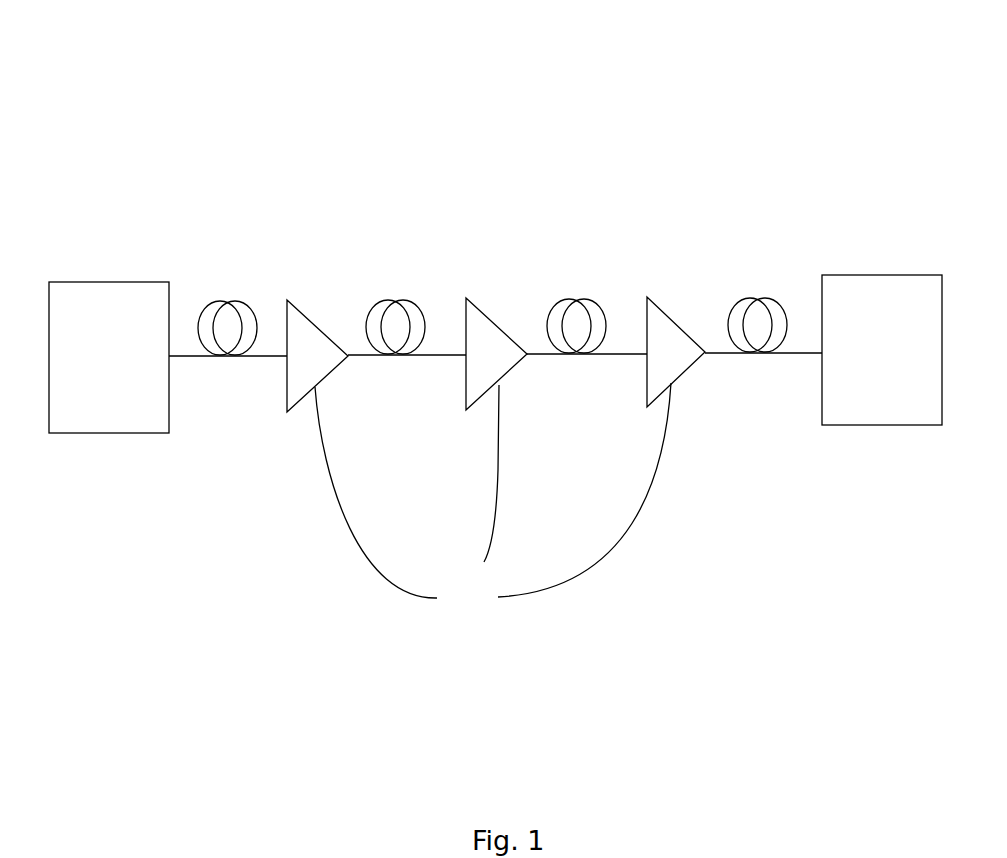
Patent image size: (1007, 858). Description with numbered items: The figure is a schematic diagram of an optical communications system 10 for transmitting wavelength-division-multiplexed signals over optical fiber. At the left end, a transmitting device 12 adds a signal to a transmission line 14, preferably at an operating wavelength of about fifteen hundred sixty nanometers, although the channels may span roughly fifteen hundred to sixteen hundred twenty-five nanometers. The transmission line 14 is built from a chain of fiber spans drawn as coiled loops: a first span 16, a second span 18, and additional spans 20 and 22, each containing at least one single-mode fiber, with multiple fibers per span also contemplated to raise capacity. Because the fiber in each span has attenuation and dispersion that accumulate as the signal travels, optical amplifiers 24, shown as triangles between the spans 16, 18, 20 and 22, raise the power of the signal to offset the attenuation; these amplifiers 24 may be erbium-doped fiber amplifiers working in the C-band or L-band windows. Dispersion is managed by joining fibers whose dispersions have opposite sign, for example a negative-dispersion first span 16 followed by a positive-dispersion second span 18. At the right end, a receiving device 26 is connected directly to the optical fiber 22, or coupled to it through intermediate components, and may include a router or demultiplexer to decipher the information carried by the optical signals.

The optical communications system 10 is at (463, 112).
The transmitting device 12 is at (109, 282).
The transmission line 14 is at (302, 508).
The first span 16 is at (217, 302).
The second span 18 is at (387, 300).
The additional span 20 is at (568, 300).
The optical fiber span 22 is at (750, 297).
The optical amplifiers 24 is at (493, 497).
The receiving device 26 is at (837, 275).